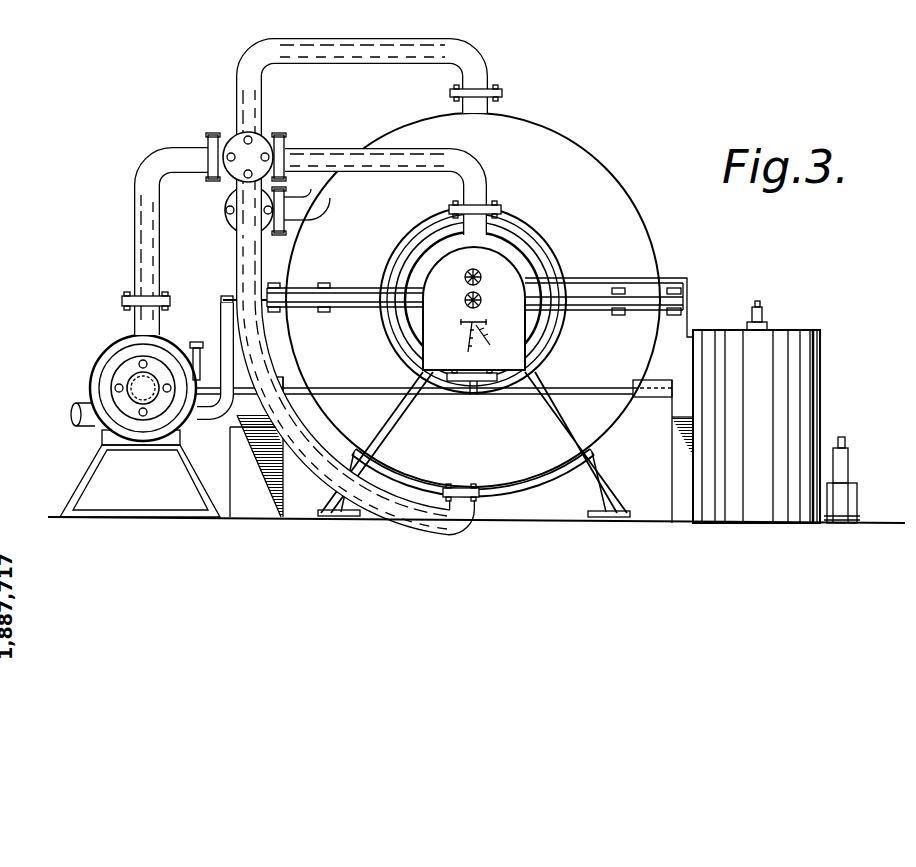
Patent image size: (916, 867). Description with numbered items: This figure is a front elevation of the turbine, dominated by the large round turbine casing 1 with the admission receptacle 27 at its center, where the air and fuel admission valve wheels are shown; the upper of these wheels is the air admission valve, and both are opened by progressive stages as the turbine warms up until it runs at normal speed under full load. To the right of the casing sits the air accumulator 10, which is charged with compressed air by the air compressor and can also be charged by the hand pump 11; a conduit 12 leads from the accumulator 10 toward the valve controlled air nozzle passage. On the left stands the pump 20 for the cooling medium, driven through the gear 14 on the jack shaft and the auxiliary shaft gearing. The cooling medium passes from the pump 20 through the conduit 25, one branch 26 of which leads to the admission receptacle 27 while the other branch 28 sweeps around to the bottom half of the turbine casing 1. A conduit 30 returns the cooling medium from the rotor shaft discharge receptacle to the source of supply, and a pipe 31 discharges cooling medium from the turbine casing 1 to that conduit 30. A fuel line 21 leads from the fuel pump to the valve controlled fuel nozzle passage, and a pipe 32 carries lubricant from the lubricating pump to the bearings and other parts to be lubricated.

The turbine casing 1 is at (580, 149).
The air accumulator 10 is at (785, 376).
The hand pump 11 is at (847, 473).
The conduit 12 is at (690, 288).
The gear 14 is at (200, 343).
The pump for the cooling medium 20 is at (107, 362).
The fuel line 21 is at (225, 300).
The conduit 25 is at (134, 260).
The branch 26 is at (478, 171).
The admission receptacle 27 is at (510, 247).
The branch 28 is at (407, 528).
The conduit 30 is at (304, 198).
The pipe 31 is at (478, 50).
The pipe 32 is at (345, 381).